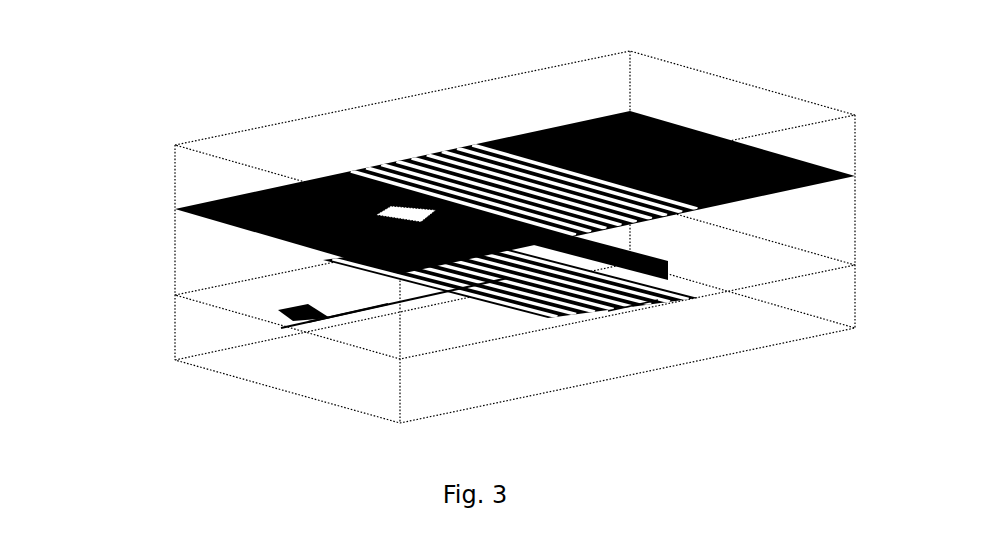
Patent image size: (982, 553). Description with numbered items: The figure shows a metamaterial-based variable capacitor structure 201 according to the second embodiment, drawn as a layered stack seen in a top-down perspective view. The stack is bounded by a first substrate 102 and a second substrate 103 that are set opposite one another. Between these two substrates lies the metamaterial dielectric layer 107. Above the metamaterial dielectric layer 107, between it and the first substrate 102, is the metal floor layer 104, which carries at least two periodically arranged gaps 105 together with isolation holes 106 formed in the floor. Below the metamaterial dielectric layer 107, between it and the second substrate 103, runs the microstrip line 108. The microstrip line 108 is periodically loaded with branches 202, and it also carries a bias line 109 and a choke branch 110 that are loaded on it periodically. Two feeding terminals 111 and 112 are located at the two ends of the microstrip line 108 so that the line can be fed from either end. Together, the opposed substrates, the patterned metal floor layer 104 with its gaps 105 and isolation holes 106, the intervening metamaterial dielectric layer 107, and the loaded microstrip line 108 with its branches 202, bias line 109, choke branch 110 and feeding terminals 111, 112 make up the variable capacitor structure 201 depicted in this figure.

The first substrate 102 is at (172, 155).
The second substrate 103 is at (185, 338).
The metal floor layer 104 is at (168, 201).
The gaps 105 is at (383, 150).
The isolation holes 106 is at (362, 203).
The metamaterial dielectric layer 107 is at (207, 258).
The microstrip line 108 is at (535, 282).
The bias line 109 is at (338, 313).
The choke branch 110 is at (262, 302).
The feeding terminal 111 is at (623, 313).
The feeding terminal 112 is at (405, 250).
The metamaterial-based variable capacitor structure 201 is at (165, 118).
The branches 202 is at (485, 308).